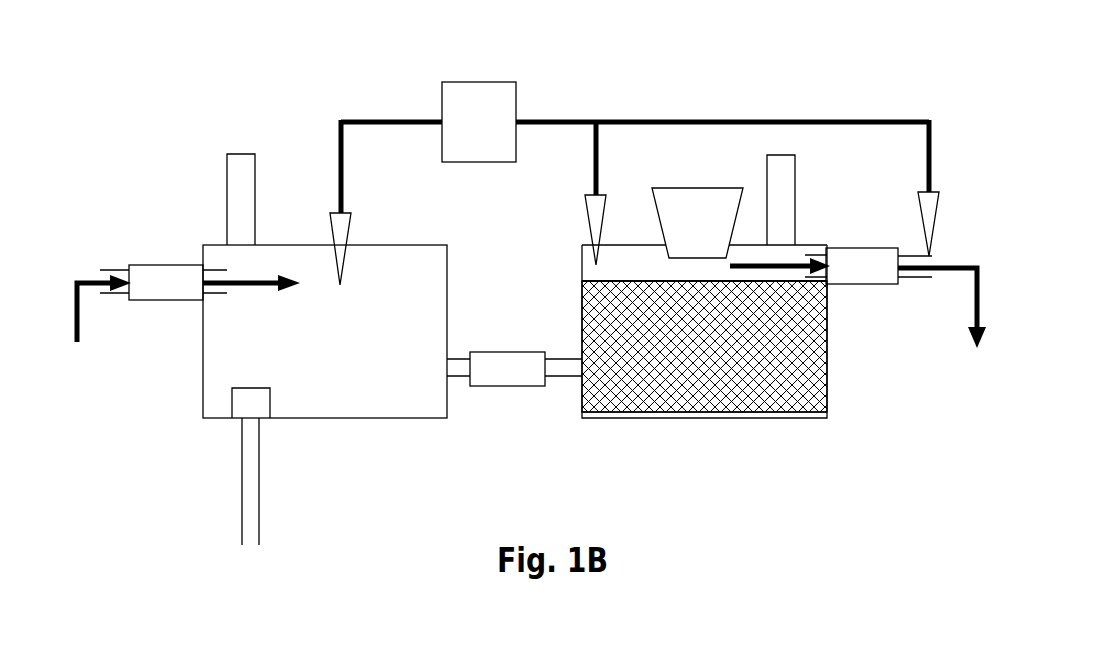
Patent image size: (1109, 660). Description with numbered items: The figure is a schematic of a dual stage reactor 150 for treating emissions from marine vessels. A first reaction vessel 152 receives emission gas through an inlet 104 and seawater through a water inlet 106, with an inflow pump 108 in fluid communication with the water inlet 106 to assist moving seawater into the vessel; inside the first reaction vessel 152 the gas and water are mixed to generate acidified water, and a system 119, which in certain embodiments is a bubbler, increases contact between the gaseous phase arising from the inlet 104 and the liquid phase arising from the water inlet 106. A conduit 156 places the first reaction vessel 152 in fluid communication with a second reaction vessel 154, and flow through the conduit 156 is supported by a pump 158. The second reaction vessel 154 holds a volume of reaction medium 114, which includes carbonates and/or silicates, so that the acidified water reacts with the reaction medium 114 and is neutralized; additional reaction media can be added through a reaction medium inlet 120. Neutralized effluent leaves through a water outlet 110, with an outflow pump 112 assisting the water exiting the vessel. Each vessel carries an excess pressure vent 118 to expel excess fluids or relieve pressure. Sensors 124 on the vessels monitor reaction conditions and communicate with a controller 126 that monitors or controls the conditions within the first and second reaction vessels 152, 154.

The inlet 104 is at (259, 502).
The water inlet 106 is at (115, 272).
The inflow pump 108 is at (166, 303).
The water outlet 110 is at (922, 253).
The outflow pump 112 is at (863, 283).
The reaction medium 114 is at (768, 377).
The excess pressure vent 118 is at (227, 200).
The system to increase contact between a gaseous phase and a liquid phase 119 is at (240, 408).
The reaction medium inlet 120 is at (720, 200).
The sensors 124 is at (337, 218).
The controller 126 is at (482, 80).
The dual stage reactor 150 is at (922, 468).
The first reaction vessel 152 is at (447, 328).
The second reaction vessel 154 is at (703, 420).
The conduit 156 is at (567, 378).
The pump 158 is at (508, 350).